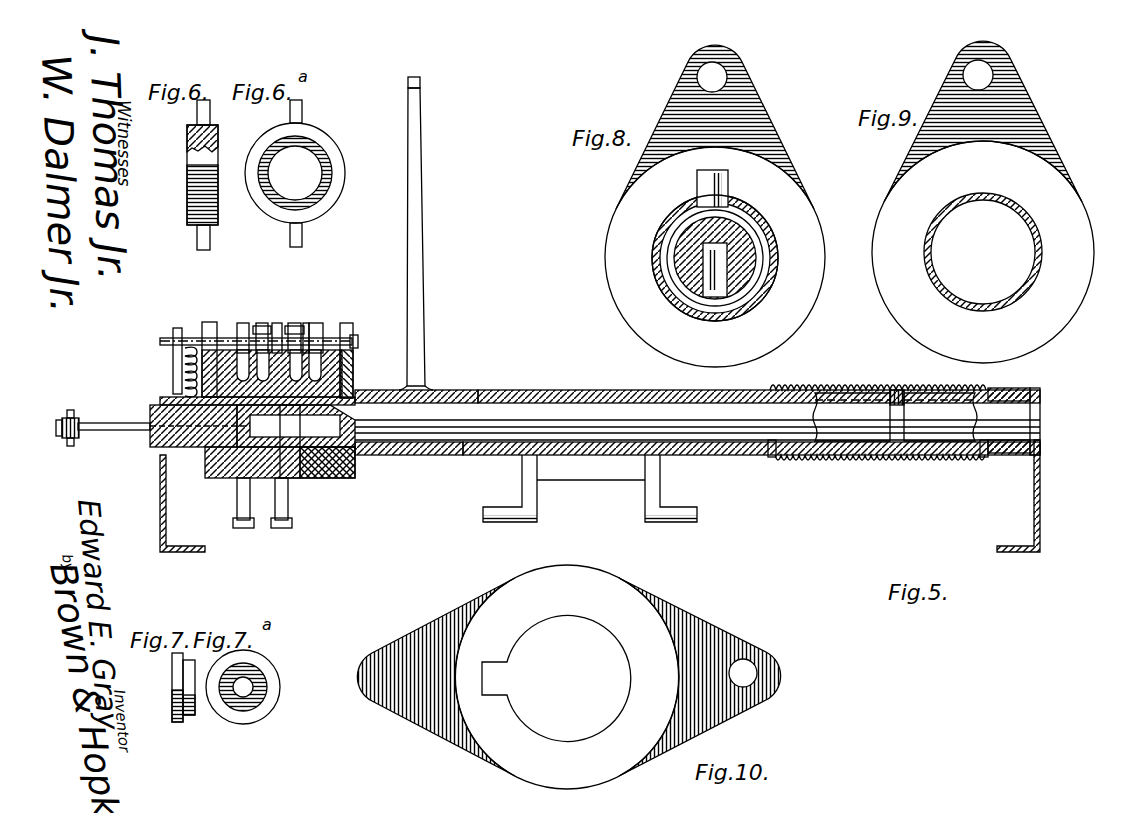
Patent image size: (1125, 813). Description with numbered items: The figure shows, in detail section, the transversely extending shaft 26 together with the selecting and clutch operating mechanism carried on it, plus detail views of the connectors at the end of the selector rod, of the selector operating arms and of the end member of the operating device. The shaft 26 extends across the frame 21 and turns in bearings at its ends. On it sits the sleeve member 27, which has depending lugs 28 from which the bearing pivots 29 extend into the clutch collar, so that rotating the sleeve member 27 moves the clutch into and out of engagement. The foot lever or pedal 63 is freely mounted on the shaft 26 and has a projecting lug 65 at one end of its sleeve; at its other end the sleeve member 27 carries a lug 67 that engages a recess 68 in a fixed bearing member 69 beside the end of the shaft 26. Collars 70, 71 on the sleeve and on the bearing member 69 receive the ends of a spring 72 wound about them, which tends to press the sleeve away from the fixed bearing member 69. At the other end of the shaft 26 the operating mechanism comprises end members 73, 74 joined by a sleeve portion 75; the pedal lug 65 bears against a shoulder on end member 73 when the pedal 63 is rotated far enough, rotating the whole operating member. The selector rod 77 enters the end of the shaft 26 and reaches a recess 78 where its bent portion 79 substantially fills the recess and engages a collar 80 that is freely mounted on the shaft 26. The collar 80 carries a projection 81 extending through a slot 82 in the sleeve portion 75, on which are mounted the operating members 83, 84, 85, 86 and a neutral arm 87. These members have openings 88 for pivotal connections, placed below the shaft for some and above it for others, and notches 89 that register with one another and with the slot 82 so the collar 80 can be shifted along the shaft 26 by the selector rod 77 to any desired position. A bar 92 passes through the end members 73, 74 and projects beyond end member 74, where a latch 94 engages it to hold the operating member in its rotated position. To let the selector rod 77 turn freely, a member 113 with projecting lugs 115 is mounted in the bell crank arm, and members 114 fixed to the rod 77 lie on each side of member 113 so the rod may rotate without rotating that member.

In FIG. 5, the frame 21 is at (160, 498).
In FIG. 5, the shaft 26 is at (448, 447).
In FIG. 5, the sleeve member 27 is at (560, 390).
In FIG. 5, the depending lugs 28 is at (645, 476).
In FIG. 5, the bearing pivots 29 is at (497, 507).
In FIG. 5, the foot lever or pedal 63 is at (415, 222).
In FIG. 5, the projecting lug 65 is at (366, 397).
In FIG. 5, the lug 67 is at (893, 390).
In FIG. 5, the recess 68 is at (905, 388).
In FIG. 5, the fixed bearing member 69 is at (950, 392).
In FIG. 5, the collar 70 is at (776, 458).
In FIG. 5, the collar 71 is at (980, 458).
In FIG. 5, the spring 72 is at (852, 457).
In FIG. 5, the end member 73 is at (340, 478).
In FIG. 9, the end member 74 is at (908, 215).
In FIG. 5, the end member 74 is at (208, 322).
In FIG. 8, the sleeve portion 75 is at (778, 267).
In FIG. 9, the sleeve portion 75 is at (969, 303).
In FIG. 5, the sleeve portion 75 is at (288, 478).
In FIG. 5, the selector rod 77 is at (133, 432).
In FIG. 8, the recess 78 is at (730, 246).
In FIG. 5, the recess 78 is at (330, 400).
In FIG. 8, the bent portion 79 is at (718, 277).
In FIG. 5, the bent portion 79 is at (322, 478).
In FIG. 8, the collar 80 is at (670, 238).
In FIG. 5, the collar 80 is at (305, 430).
In FIG. 5, the projection 81 is at (345, 365).
In FIG. 8, the slot 82 is at (728, 204).
In FIG. 5, the slot 82 is at (302, 322).
In FIG. 10, the operating member 83 is at (523, 743).
In FIG. 5, the operating member 83 is at (238, 322).
In FIG. 8, the operating member 84 is at (632, 177).
In FIG. 5, the operating member 84 is at (258, 322).
In FIG. 5, the operating member 85 is at (274, 322).
In FIG. 5, the operating member 86 is at (291, 322).
In FIG. 5, the neutral arm 87 is at (315, 322).
In FIG. 8, the openings 88 is at (700, 77).
In FIG. 9, the openings 88 is at (965, 75).
In FIG. 10, the openings 88 is at (742, 668).
In FIG. 8, the notches 89 is at (697, 186).
In FIG. 10, the notches 89 is at (505, 667).
In FIG. 5, the bar 92 is at (160, 342).
In FIG. 5, the latch 94 is at (178, 330).
In FIG. 6, the member 113 is at (187, 140).
In FIG. 6A, the member 113 is at (306, 143).
In FIG. 5, the member 113 is at (66, 418).
In FIG. 7, the members 114 is at (183, 722).
In FIG. 7A, the members 114 is at (256, 702).
In FIG. 5, the members 114 is at (58, 435).
In FIG. 6, the projecting lugs 115 is at (212, 236).
In FIG. 6A, the projecting lugs 115 is at (290, 108).
In FIG. 5, the projecting lugs 115 is at (74, 410).